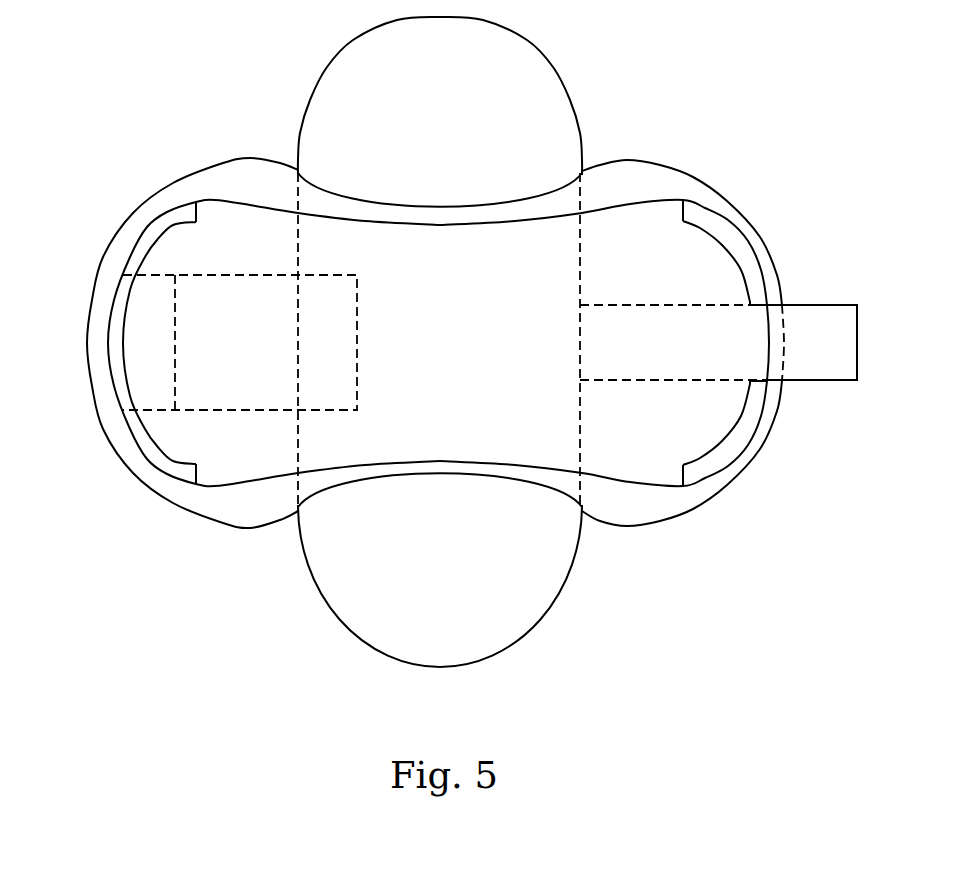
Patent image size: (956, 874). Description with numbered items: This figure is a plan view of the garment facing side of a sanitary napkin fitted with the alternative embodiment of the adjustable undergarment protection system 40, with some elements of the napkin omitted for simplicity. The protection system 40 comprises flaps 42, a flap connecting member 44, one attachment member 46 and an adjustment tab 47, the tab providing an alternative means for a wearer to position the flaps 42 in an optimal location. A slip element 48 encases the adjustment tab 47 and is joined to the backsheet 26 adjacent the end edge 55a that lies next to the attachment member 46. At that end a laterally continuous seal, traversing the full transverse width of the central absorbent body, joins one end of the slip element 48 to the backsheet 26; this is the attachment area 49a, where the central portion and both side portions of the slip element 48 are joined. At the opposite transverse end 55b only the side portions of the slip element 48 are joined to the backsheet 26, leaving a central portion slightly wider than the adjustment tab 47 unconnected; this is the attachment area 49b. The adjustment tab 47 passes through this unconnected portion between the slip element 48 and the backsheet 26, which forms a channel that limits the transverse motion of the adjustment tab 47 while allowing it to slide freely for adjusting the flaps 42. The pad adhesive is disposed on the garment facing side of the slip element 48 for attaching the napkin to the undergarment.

The backsheet 26 is at (663, 183).
The adjustable undergarment protection system 40 is at (305, 611).
The flap 42 is at (523, 597).
The flap connecting member 44 is at (522, 358).
The attachment member 46 is at (223, 392).
The adjustment tab 47 is at (832, 363).
The slip element 48 is at (257, 447).
The attachment area 49a is at (158, 233).
The attachment area 49b is at (733, 249).
The end edge 55a is at (98, 275).
The transverse end 55b is at (783, 295).